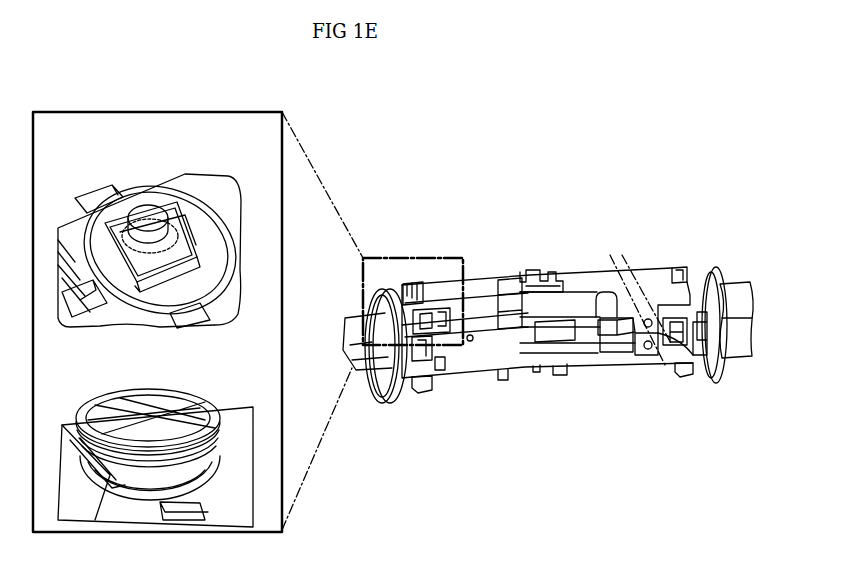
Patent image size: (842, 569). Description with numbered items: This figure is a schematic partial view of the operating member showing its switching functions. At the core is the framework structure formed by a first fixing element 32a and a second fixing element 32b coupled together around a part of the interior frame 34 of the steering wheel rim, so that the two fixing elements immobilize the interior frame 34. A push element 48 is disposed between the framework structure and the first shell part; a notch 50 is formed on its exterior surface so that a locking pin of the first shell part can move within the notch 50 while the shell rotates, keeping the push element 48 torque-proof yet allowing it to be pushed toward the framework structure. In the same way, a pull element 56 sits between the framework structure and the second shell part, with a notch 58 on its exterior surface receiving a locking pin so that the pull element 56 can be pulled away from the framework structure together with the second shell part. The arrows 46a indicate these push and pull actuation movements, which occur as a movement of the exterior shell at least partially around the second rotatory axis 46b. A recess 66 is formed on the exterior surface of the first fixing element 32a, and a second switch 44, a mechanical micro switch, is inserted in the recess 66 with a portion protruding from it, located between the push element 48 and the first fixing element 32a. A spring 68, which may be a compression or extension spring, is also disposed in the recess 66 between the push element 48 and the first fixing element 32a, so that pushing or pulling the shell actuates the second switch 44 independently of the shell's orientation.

The first fixing element 32a is at (76, 232).
The second fixing element 32b is at (722, 364).
The interior frame 34 is at (738, 318).
The second switch 44 is at (148, 220).
The arrows 46a is at (411, 249).
The second rotatory axis 46b is at (668, 375).
The push element 48 is at (588, 290).
The notch 50 is at (413, 282).
The pull element 56 is at (560, 368).
The notch 58 is at (426, 392).
The recess 66 is at (193, 211).
The spring 68 is at (165, 393).